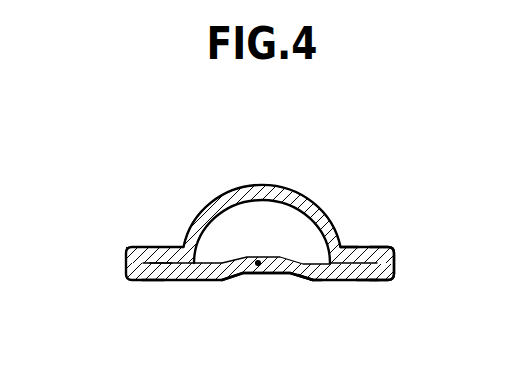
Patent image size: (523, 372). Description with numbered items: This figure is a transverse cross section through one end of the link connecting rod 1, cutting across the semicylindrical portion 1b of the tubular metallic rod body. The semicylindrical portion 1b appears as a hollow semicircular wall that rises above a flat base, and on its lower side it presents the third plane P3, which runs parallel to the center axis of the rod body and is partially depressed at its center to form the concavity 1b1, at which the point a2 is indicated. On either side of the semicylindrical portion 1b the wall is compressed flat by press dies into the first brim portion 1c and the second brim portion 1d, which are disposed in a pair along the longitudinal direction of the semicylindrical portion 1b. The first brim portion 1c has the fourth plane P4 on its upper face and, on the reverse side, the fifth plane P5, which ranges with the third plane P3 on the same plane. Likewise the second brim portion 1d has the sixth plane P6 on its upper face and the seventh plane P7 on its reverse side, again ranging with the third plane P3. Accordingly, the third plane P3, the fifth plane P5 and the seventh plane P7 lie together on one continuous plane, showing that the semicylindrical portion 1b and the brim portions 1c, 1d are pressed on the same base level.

The link connecting rod 1 is at (343, 188).
The semicylindrical portion 1b is at (197, 213).
The concavity 1b1 is at (242, 282).
The first brim portion 1c is at (381, 248).
The second brim portion 1d is at (128, 258).
The contact point a2 is at (259, 261).
The third plane P3 is at (308, 282).
The fourth plane P4 is at (351, 249).
The fifth plane P5 is at (367, 282).
The sixth plane P6 is at (161, 260).
The seventh plane P7 is at (152, 282).